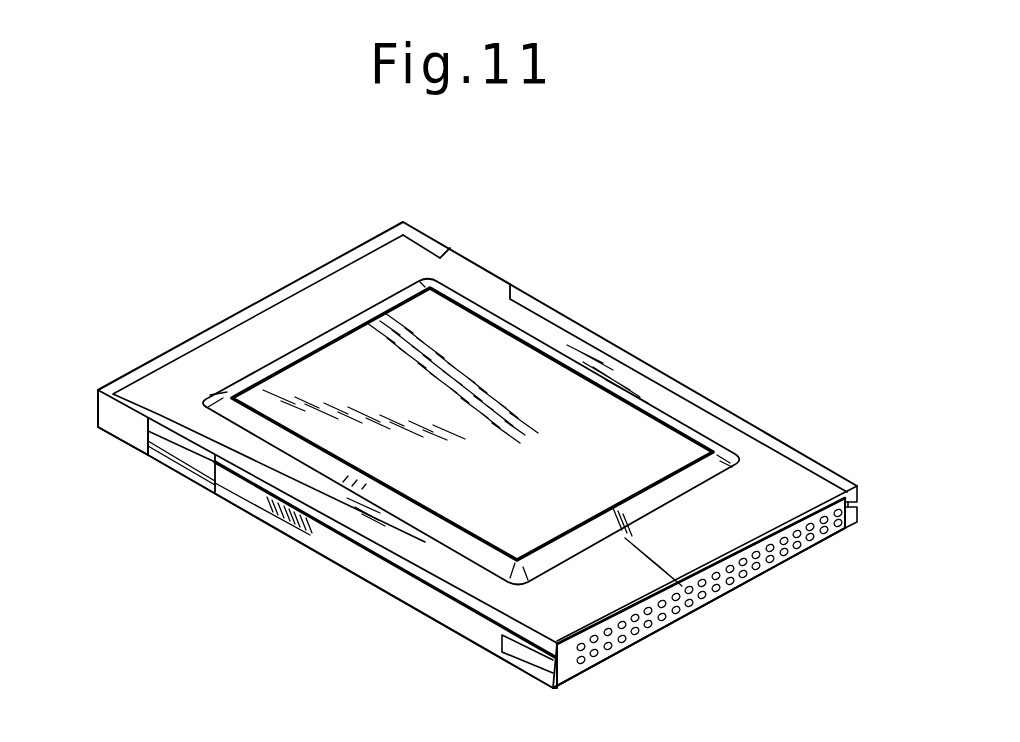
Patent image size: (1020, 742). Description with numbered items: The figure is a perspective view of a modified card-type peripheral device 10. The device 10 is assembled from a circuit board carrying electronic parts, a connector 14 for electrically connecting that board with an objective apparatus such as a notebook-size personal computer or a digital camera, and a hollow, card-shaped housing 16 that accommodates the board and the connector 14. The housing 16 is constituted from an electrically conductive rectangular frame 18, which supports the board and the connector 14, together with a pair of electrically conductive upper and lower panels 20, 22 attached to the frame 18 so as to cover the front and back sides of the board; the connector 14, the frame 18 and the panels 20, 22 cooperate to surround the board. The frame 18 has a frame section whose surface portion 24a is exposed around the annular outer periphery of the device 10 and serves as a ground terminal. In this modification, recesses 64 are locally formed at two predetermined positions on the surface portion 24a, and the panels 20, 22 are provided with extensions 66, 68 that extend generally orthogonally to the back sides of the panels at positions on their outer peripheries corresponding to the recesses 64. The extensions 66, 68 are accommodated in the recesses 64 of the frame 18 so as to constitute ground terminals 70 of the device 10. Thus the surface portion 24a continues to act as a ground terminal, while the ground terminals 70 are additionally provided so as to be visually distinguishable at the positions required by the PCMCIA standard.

The card-type peripheral device 10 is at (483, 188).
The connector 14 is at (719, 580).
The housing 16 is at (300, 245).
The frame 18 is at (210, 331).
The upper panel 20 is at (289, 333).
The lower panel 22 is at (153, 463).
The surface portion 24a is at (338, 549).
The recesses 64 is at (512, 290).
The extension of upper panel 66 is at (200, 457).
The extension of lower panel 68 is at (215, 531).
The ground terminals 70 is at (478, 436).